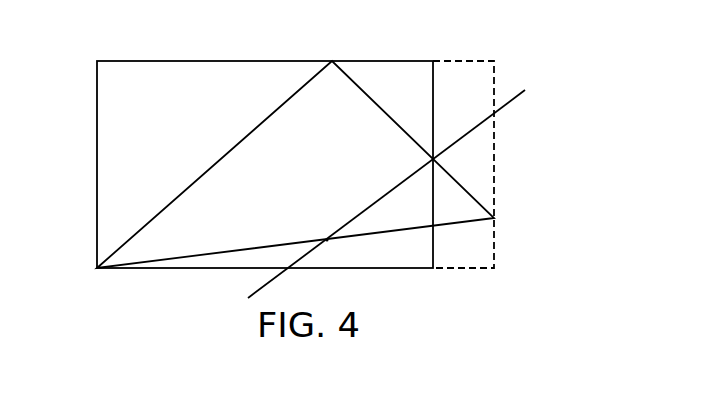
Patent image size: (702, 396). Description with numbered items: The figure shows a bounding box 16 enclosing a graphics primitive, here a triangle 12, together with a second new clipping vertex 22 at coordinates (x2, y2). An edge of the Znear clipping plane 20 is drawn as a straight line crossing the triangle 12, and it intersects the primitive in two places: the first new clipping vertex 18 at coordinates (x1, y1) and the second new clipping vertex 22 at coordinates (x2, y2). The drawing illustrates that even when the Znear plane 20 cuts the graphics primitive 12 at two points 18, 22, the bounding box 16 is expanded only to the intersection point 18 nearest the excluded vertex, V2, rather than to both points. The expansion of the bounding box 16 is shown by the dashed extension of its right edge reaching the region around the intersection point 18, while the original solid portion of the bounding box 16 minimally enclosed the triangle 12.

The triangle 12 is at (233, 147).
The bounding box 16 is at (97, 110).
The first new (x1, y1) clipping vertex 18 is at (532, 158).
The edge of the Znear clipping plane 20 is at (511, 89).
The second new (x2, y2) clipping vertex 22 is at (327, 243).